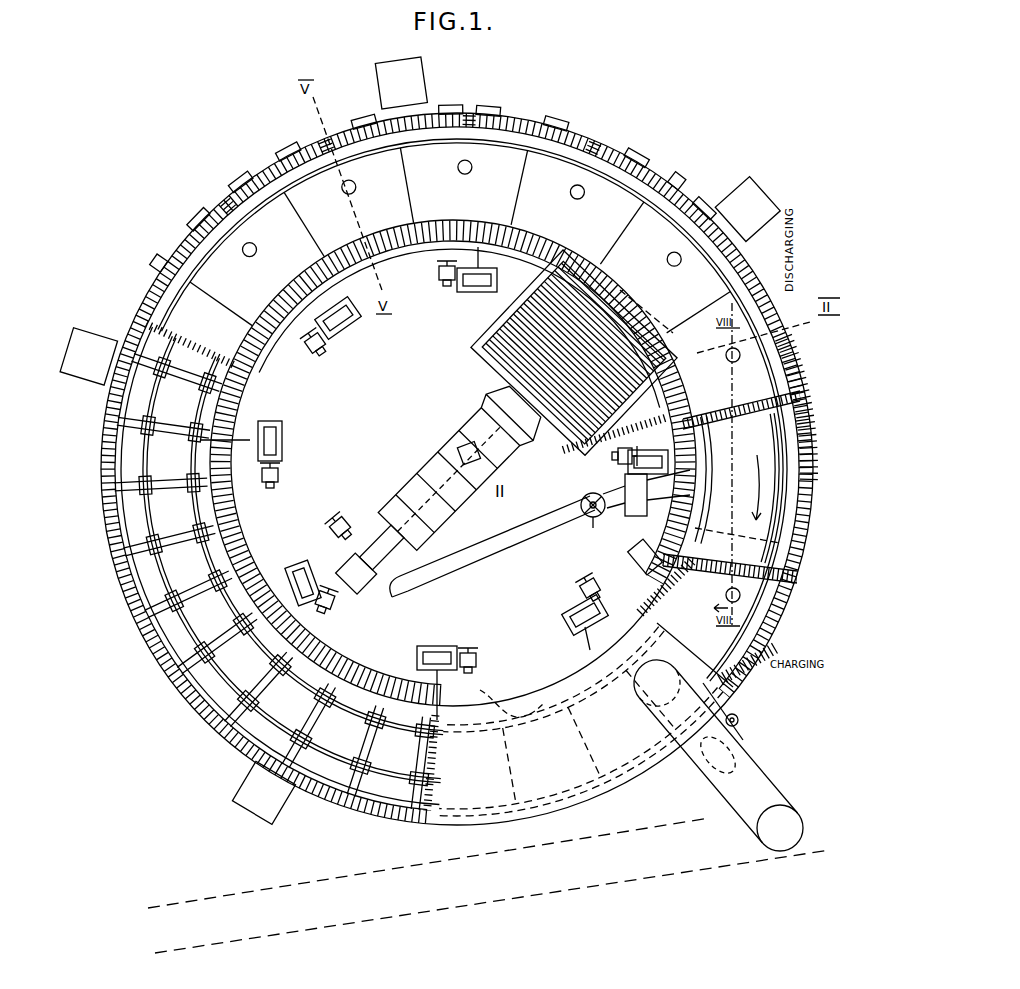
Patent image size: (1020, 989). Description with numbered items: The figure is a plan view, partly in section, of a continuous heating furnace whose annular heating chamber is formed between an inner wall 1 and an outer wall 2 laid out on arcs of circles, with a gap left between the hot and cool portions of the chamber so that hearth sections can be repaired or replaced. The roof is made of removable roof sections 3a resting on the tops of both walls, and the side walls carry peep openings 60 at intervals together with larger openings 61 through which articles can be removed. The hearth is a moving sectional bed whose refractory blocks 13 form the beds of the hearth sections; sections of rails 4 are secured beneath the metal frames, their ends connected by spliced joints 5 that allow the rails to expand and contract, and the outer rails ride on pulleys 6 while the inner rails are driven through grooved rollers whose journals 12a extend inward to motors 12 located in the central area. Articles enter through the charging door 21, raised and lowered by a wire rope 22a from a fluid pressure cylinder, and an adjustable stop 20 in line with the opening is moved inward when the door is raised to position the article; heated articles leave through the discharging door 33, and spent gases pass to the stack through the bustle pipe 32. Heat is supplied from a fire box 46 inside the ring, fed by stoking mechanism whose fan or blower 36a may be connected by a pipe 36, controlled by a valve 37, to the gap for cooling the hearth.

The inner wall 1 is at (255, 582).
The outer wall 2 is at (195, 236).
The roof sections 3a is at (489, 790).
The rails 4 is at (190, 458).
The spliced joints 5 is at (190, 400).
The pulleys 6 is at (178, 603).
The motors 12 is at (282, 472).
The journals 12a is at (265, 428).
The refractory blocks 13 is at (243, 182).
The adjustable stop 20 is at (645, 572).
The charging door 21 is at (772, 632).
The wire rope 22a is at (738, 690).
The bustle pipe 32 is at (760, 780).
The discharging door 33 is at (790, 314).
The pipe 36 is at (560, 515).
The fan or blower 36a is at (372, 578).
The valve 37 is at (593, 520).
The combustion chamber or fire box 46 is at (470, 325).
The peep openings 60 is at (147, 321).
The openings 61 is at (247, 178).